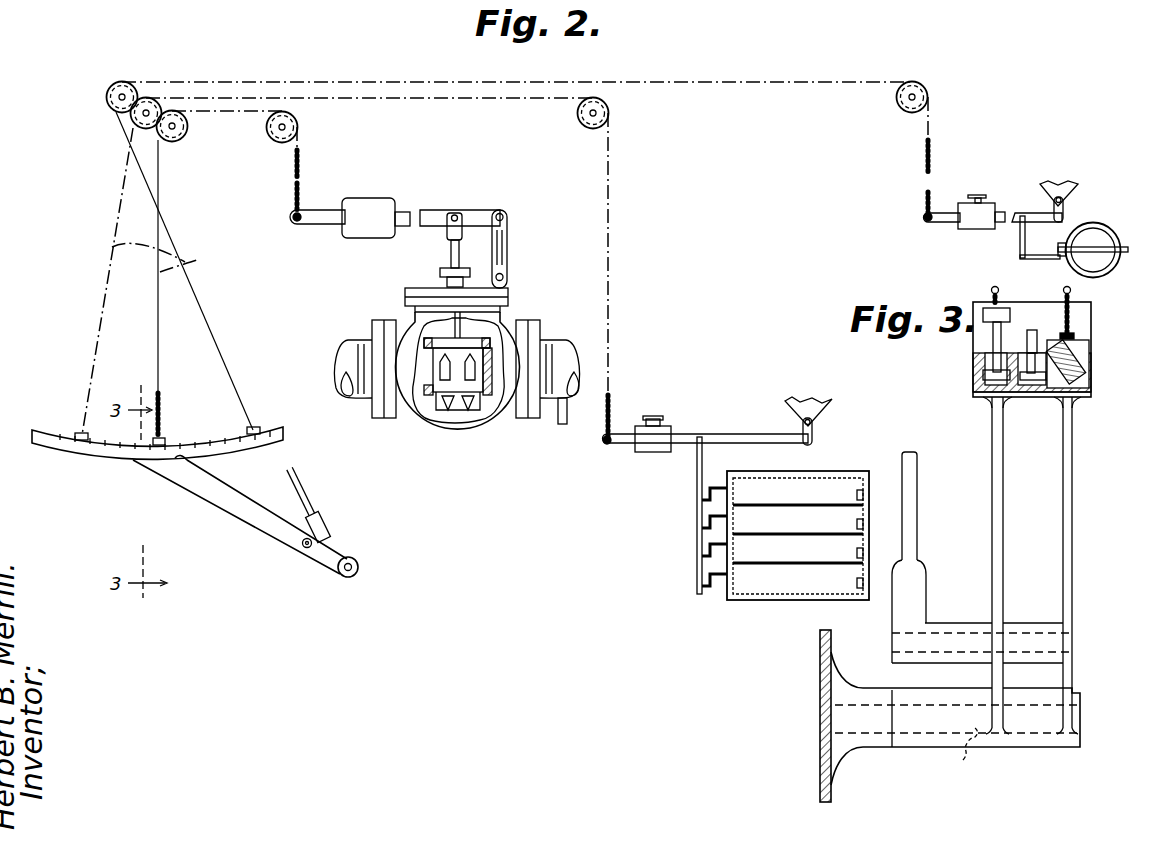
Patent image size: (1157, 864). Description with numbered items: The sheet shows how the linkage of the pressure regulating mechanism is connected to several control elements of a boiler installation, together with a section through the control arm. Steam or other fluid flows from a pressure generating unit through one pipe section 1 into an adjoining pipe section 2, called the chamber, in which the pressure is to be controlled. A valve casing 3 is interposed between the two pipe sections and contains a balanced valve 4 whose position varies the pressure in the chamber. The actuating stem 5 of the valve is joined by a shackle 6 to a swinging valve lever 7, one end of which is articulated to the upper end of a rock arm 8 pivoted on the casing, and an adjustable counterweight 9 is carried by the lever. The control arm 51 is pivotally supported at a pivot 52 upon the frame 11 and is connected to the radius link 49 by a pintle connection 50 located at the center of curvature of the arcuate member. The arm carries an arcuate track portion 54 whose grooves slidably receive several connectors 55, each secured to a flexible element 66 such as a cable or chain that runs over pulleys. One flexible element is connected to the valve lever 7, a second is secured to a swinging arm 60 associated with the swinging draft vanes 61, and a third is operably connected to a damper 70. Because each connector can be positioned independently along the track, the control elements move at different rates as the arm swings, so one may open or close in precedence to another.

In FIG. 2, the flexible elements 66 is at (228, 143).
In FIG. 3, the flexible elements 66 is at (1065, 289).
In FIG. 2, the valve lever 7 is at (308, 220).
In FIG. 2, the adjustable counterweight 9 is at (372, 212).
In FIG. 2, the rock arm 8 is at (508, 246).
In FIG. 2, the shackle 6 is at (450, 228).
In FIG. 2, the actuating stem 5 is at (450, 253).
In FIG. 2, the valve casing 3 is at (475, 422).
In FIG. 2, the valve 4 is at (448, 412).
In FIG. 2, the pipe section 1 is at (350, 350).
In FIG. 2, the pipe section 2 is at (572, 350).
In FIG. 2, the swinging arm 60 is at (735, 440).
In FIG. 2, the swinging draft vanes 61 is at (795, 578).
In FIG. 2, the damper 70 is at (1097, 240).
In FIG. 3, the connectors 55 is at (983, 349).
In FIG. 3, the track portion 54 is at (983, 395).
In FIG. 3, the pintle connection 50 is at (905, 640).
In FIG. 3, the control arm 51 is at (1060, 525).
In FIG. 3, the radius link 49 is at (910, 510).
In FIG. 3, the frame 11 is at (848, 752).
In FIG. 3, the pivot 52 is at (964, 760).